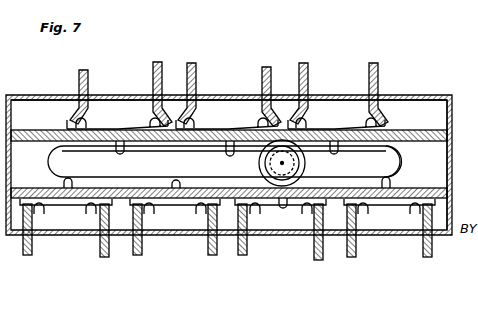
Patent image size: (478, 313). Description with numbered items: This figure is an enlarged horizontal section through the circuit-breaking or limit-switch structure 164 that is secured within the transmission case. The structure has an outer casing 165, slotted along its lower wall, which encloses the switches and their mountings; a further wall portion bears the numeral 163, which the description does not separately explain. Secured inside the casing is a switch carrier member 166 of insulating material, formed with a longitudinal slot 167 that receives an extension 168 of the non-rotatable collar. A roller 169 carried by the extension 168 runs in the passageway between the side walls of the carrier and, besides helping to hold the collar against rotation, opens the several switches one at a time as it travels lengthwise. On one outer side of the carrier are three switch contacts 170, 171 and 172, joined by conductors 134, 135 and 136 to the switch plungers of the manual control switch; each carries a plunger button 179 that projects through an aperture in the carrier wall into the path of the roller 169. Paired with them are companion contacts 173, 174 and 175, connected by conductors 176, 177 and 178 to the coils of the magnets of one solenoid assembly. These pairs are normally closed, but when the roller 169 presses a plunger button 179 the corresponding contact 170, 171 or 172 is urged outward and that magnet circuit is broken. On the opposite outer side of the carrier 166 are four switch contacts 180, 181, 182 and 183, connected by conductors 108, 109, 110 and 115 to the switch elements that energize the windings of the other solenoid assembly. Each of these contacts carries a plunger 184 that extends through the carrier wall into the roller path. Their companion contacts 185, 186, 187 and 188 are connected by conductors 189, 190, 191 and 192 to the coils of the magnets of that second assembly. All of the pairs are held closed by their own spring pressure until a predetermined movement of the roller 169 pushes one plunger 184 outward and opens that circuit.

The conductor 108 is at (26, 256).
The conductor 109 is at (137, 257).
The conductor 110 is at (243, 257).
The conductor 115 is at (352, 258).
The conductor 134 is at (78, 78).
The conductor 135 is at (197, 76).
The conductor 136 is at (308, 70).
The housing side wall 163 is at (452, 182).
The circuit-breaking or limit-switch structure 164 is at (448, 92).
The outer casing 165 is at (42, 96).
The switch carrier member 166 is at (424, 130).
The longitudinal slot 167 is at (396, 153).
The extension 168 is at (270, 163).
The roller 169 is at (301, 159).
The switch contact 170 is at (104, 126).
The switch contact 171 is at (210, 126).
The switch contact 172 is at (318, 126).
The companion contact 173 is at (150, 125).
The companion contact 174 is at (256, 125).
The companion contact 175 is at (364, 125).
The conductor 176 is at (152, 72).
The conductor 177 is at (262, 72).
The conductor 178 is at (379, 68).
The plunger button 179 is at (215, 152).
The switch contact 180 is at (44, 206).
The switch contact 181 is at (152, 206).
The switch contact 182 is at (258, 206).
The switch contact 183 is at (366, 206).
The plunger 184 is at (72, 185).
The companion contact 185 is at (90, 206).
The companion contact 186 is at (200, 207).
The companion contact 187 is at (306, 207).
The companion contact 188 is at (414, 207).
The conductor 189 is at (103, 258).
The conductor 190 is at (210, 257).
The conductor 191 is at (318, 263).
The conductor 192 is at (432, 250).